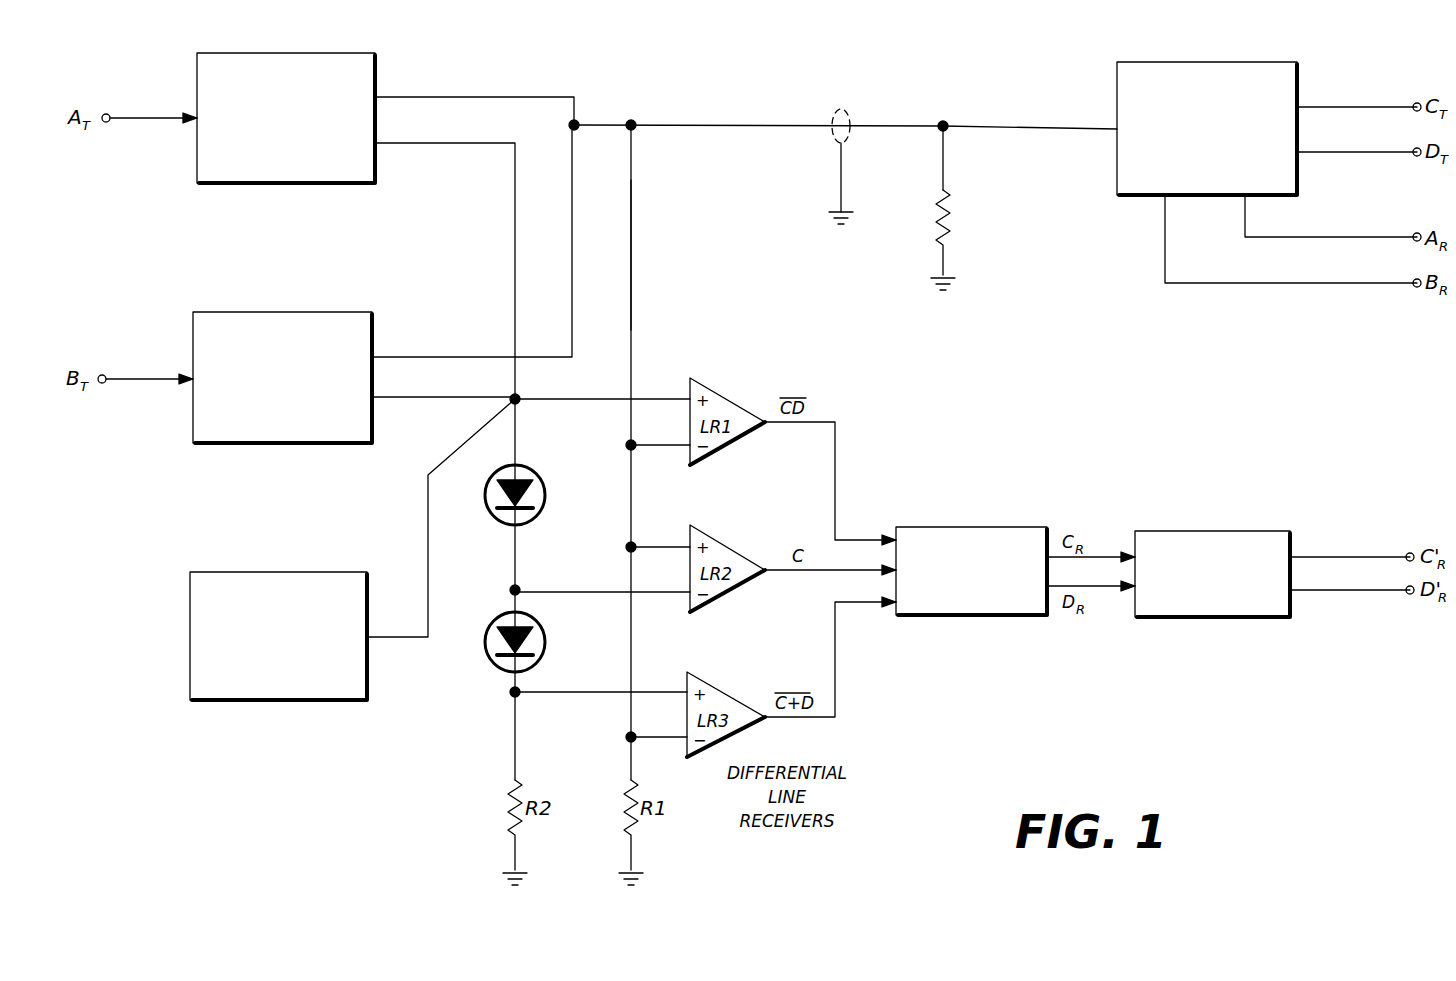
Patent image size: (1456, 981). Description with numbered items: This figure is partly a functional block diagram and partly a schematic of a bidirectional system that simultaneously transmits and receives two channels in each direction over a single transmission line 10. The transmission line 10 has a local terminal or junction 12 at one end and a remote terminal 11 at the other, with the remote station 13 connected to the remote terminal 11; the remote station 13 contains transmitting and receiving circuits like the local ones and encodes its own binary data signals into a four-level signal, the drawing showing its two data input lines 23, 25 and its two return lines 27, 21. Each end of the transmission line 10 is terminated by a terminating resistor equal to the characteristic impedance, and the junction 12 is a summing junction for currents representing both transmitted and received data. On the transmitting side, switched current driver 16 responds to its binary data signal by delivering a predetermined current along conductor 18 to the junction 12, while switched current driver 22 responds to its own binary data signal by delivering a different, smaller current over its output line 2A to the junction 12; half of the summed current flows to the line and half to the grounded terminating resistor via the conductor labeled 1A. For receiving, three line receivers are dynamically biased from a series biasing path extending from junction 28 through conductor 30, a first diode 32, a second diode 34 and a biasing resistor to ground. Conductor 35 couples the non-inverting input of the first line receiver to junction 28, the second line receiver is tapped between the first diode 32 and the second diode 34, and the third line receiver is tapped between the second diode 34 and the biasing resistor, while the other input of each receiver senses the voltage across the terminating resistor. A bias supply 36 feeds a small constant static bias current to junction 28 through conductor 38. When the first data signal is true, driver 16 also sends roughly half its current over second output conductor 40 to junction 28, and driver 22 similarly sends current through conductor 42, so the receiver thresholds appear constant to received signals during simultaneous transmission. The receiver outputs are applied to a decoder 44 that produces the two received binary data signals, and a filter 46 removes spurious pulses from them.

The switched current driver 16 is at (365, 53).
The conductor 18 is at (524, 97).
The second output conductor 40 is at (470, 150).
The transmission line 10 is at (873, 125).
The local terminal or junction 12 is at (631, 110).
The line conductor 1A is at (631, 253).
The remote terminal 11 is at (943, 120).
The remote station 13 is at (1117, 62).
The output line CT 23 is at (1350, 107).
The output line DT 25 is at (1328, 157).
The return line 27 is at (1165, 242).
The return line 21 is at (1245, 240).
The switched current driver 22 is at (292, 443).
The conductor 2A is at (430, 357).
The conductor 42 is at (440, 397).
The junction 28 is at (520, 396).
The conductor 35 is at (598, 396).
The conductor 30 is at (515, 432).
The first diode 32 is at (545, 488).
The second diode 34 is at (545, 636).
The bias supply 36 is at (292, 700).
The conductor 38 is at (420, 637).
The decoder 44 is at (977, 527).
The filter 46 is at (1218, 531).